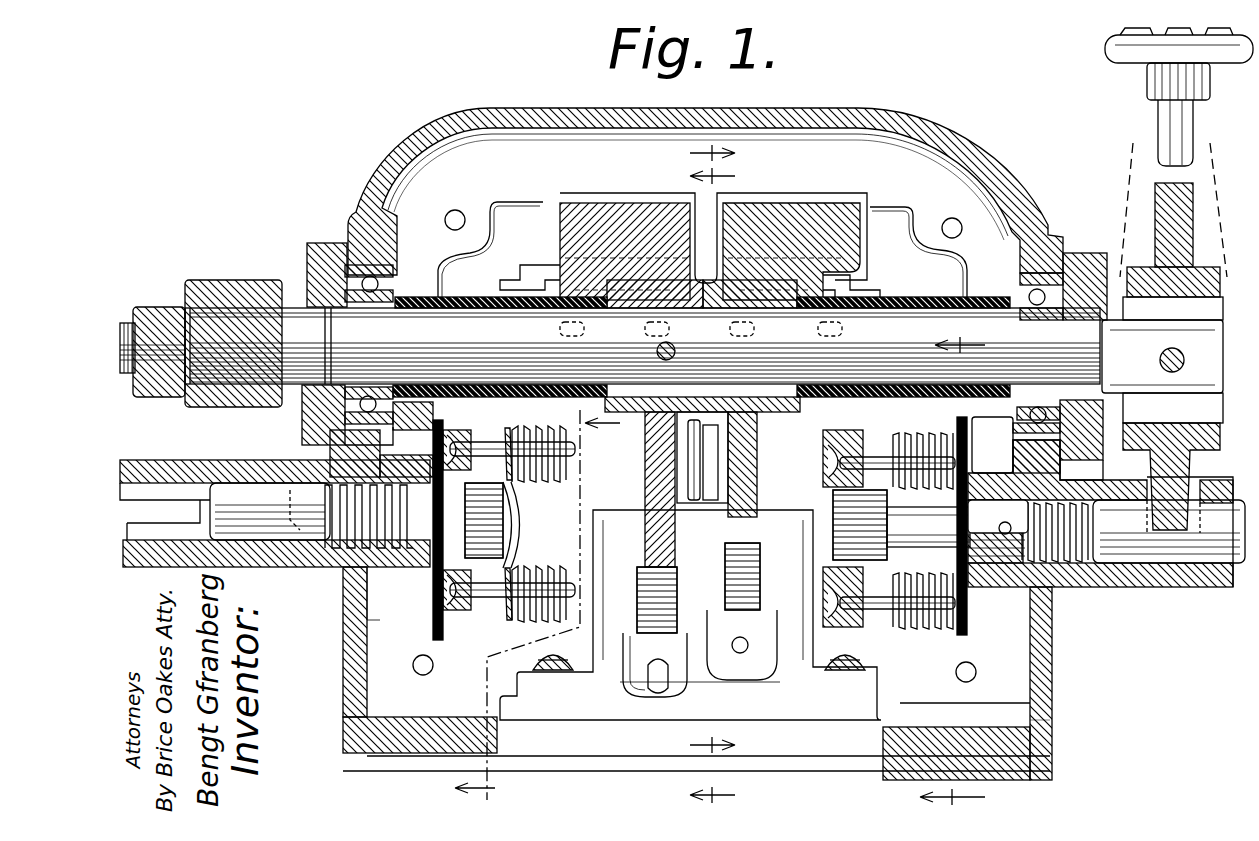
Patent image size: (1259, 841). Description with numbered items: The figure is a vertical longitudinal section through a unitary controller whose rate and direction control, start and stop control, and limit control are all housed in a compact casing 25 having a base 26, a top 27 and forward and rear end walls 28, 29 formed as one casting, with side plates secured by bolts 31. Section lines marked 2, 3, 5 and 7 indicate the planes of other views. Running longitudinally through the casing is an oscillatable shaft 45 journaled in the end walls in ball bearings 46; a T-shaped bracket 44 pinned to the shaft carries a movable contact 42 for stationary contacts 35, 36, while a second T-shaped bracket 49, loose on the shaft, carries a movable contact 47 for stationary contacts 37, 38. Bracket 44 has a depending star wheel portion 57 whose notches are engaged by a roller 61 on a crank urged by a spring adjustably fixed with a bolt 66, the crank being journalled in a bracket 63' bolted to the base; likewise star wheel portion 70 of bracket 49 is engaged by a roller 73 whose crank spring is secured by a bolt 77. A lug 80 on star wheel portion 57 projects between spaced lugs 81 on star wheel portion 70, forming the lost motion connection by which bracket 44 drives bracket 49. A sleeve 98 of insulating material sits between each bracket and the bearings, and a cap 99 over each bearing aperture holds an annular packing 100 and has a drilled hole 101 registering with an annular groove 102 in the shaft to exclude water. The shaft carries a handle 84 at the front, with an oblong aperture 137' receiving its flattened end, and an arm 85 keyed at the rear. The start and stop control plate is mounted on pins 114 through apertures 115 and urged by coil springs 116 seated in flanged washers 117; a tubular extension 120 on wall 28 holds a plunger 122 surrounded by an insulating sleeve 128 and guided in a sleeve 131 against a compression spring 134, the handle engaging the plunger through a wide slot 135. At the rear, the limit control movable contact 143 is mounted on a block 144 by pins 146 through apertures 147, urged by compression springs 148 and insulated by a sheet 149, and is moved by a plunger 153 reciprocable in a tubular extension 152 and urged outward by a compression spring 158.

The section line 2 is at (724, 488).
The section line 3 is at (687, 448).
The section line 5 is at (964, 571).
The section line 7 is at (537, 607).
The casing 25 is at (1065, 728).
The base 26 is at (415, 730).
The top 27 is at (835, 112).
The forward end wall 28 is at (1040, 694).
The rear end wall 29 is at (343, 640).
The bolts 31 is at (456, 218).
The stationary contact 35 is at (584, 330).
The stationary contact 36 is at (669, 330).
The stationary contact 37 is at (754, 330).
The stationary contact 38 is at (842, 330).
The movable contact 42 is at (545, 285).
The T-shaped bracket 44 is at (603, 205).
The oscillatable shaft 45 is at (642, 346).
The ball bearings 46 is at (438, 276).
The movable contact 47 is at (860, 292).
The T-shaped bracket 49 is at (800, 214).
The star wheel portion 57 is at (650, 492).
The roller 61 is at (657, 600).
The bracket 63' is at (690, 630).
The bolt 66 is at (655, 665).
The star wheel portion 70 is at (757, 448).
The roller 73 is at (742, 576).
The bolt 77 is at (741, 637).
The lug 80 is at (710, 480).
The spaced lugs 81 is at (690, 468).
The handle 84 is at (1165, 150).
The arm 85 is at (213, 282).
The sleeve 98 is at (480, 288).
The cap 99 is at (300, 428).
The annular packing 100 is at (312, 256).
The drilled hole 101 is at (330, 440).
The annular groove 102 is at (310, 338).
The pins 114 is at (832, 460).
The apertures 115 is at (880, 610).
The coil springs 116 is at (922, 620).
The flanged washers 117 is at (950, 640).
The tubular extension 120 is at (1210, 590).
The plunger 122 is at (1125, 560).
The sleeve 128 is at (943, 503).
The sleeve 131 is at (990, 500).
The compression spring 134 is at (1060, 570).
The wide slot 135 is at (1190, 485).
The oblong aperture 137' is at (1162, 361).
The movable contact 143 is at (515, 480).
The block 144 is at (478, 598).
The pins 146 is at (433, 600).
The apertures 147 is at (505, 605).
The compression springs 148 is at (535, 568).
The sheet 149 is at (440, 580).
The tubular extension 152 is at (270, 568).
The plunger 153 is at (253, 495).
The compression spring 158 is at (381, 439).